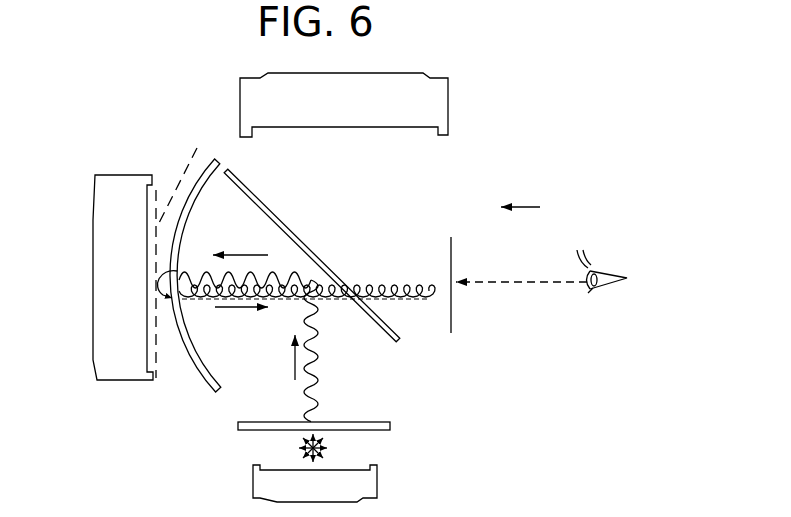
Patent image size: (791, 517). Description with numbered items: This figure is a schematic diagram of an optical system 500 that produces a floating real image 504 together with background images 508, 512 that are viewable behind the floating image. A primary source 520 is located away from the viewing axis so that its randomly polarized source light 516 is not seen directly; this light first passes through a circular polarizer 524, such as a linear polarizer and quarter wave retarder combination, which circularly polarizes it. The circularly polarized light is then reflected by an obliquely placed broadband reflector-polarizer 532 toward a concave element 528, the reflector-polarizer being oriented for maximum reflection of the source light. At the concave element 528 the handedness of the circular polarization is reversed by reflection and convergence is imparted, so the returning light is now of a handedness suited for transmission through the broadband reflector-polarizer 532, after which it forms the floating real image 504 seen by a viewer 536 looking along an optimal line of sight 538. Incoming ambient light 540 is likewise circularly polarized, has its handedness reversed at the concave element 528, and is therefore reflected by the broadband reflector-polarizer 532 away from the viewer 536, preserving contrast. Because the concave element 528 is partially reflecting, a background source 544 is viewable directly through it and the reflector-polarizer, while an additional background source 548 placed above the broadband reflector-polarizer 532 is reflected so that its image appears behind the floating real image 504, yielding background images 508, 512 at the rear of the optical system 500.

The optical system 500 is at (592, 95).
The floating real image 504 is at (453, 305).
The background image 508 is at (150, 193).
The background image 512 is at (207, 127).
The source light 516 is at (333, 448).
The primary source 520 is at (252, 502).
The circular polarizer 524 is at (345, 422).
The concave element 528 is at (207, 388).
The broadband reflector-polarizer 532 is at (399, 345).
The viewer 536 is at (597, 293).
The optimal line of sight 538 is at (512, 278).
The ambient light 540 is at (530, 203).
The background source 544 is at (100, 385).
The additional background source 548 is at (450, 88).